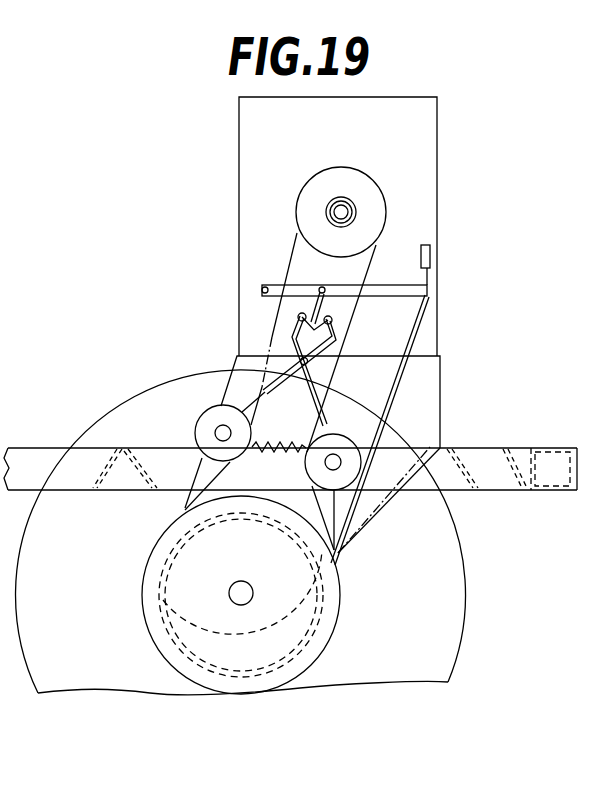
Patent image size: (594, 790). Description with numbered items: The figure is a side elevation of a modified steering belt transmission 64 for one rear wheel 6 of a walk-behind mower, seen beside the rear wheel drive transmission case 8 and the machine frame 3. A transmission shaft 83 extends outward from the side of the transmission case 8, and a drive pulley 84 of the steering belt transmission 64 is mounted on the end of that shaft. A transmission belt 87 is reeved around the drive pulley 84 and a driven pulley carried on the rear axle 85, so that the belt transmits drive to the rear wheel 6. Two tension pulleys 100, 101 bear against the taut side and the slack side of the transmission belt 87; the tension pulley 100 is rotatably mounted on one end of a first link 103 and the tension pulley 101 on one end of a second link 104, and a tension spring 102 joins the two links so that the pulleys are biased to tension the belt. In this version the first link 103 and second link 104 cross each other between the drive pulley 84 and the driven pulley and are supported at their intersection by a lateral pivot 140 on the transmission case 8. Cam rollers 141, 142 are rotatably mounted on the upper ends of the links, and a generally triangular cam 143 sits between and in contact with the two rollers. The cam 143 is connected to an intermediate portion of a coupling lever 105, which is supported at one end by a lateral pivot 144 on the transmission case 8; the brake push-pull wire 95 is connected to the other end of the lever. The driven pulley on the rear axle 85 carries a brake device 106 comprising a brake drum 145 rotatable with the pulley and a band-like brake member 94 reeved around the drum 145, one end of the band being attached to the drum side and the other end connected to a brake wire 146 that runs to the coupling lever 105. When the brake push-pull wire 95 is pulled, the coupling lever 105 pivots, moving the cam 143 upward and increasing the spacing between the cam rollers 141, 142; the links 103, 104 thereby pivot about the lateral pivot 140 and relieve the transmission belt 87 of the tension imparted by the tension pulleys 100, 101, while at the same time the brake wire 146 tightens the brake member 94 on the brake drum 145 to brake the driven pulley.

The machine frame 3 is at (520, 448).
The rear wheel 6 is at (473, 577).
The rear wheel drive transmission case 8 is at (428, 141).
The steering belt transmission 64 is at (310, 172).
The transmission shaft 83 is at (342, 204).
The drive pulley 84 is at (375, 191).
The rear axle 85 is at (244, 590).
The transmission belt 87 is at (294, 232).
The brake member 94 is at (165, 650).
The brake push-pull wire 95 is at (422, 245).
The tension pulley 100 is at (206, 412).
The tension pulley 101 is at (353, 470).
The tension spring 102 is at (284, 454).
The first link 103 is at (278, 388).
The second link 104 is at (386, 414).
The coupling lever 105 is at (390, 286).
The brake device 106 is at (345, 594).
The lateral pivot 140 is at (309, 362).
The cam roller 141 is at (334, 319).
The cam roller 142 is at (298, 315).
The cam 143 is at (311, 310).
The lateral pivot 144 is at (263, 287).
The brake drum 145 is at (170, 572).
The brake wire 146 is at (402, 392).